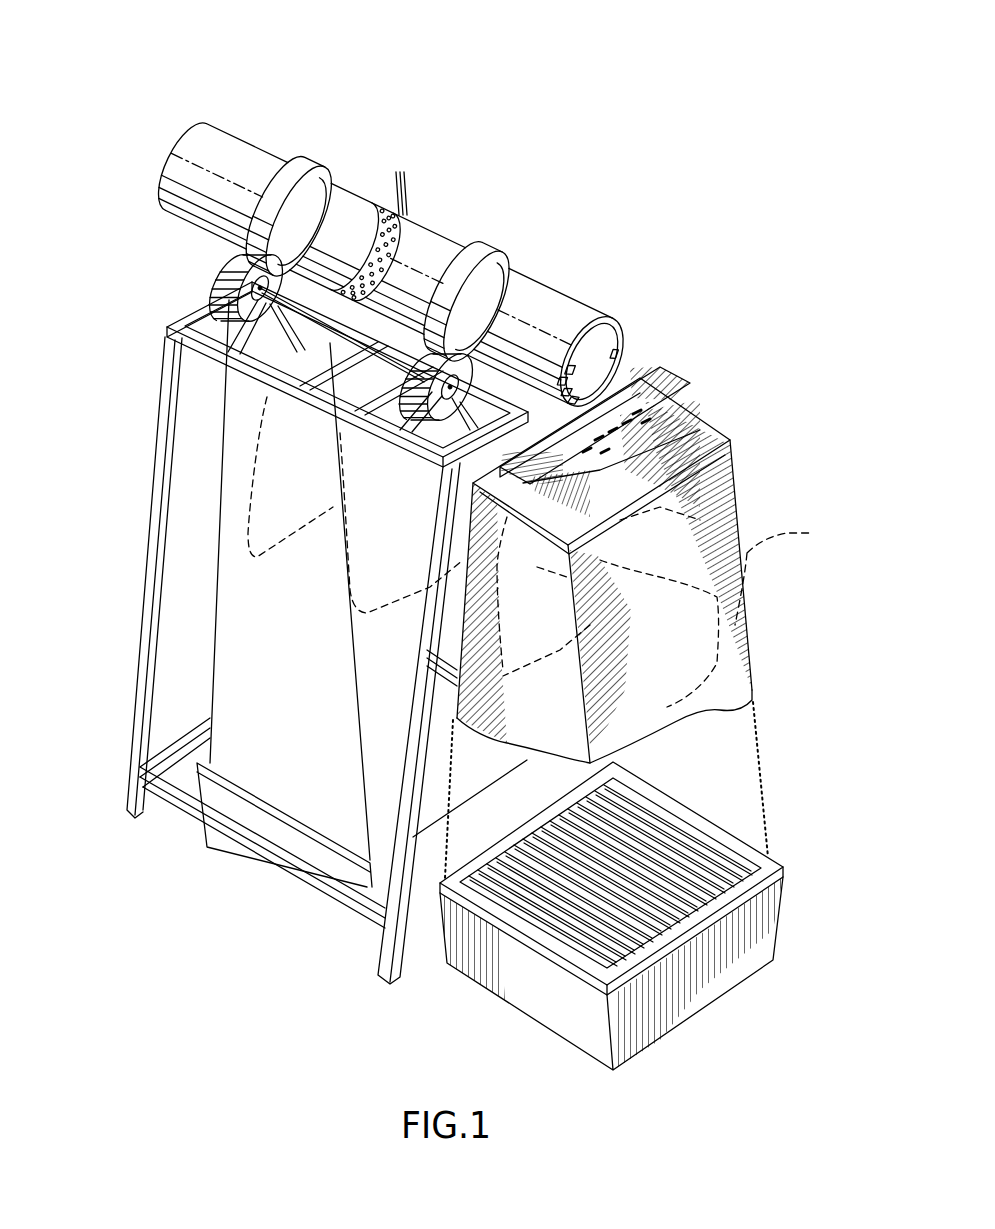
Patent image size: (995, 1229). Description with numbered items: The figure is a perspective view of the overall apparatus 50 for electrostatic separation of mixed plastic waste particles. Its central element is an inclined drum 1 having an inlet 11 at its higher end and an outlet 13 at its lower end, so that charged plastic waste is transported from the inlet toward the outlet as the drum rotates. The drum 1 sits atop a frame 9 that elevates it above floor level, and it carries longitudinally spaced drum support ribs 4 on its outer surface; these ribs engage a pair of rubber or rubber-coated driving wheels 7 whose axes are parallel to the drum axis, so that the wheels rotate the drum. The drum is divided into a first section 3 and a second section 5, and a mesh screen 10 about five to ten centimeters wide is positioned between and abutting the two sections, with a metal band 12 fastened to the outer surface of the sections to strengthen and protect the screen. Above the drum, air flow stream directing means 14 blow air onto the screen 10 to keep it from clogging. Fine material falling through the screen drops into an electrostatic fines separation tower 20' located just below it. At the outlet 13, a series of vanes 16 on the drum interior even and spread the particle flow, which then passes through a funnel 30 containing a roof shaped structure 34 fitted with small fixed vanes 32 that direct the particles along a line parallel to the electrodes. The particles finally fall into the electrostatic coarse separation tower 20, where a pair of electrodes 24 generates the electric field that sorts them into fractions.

The drum 1 is at (262, 140).
The first section 3 is at (426, 244).
The drum support ribs 4 is at (315, 164).
The second section 5 is at (755, 231).
The driving wheel 7 is at (236, 254).
The frame 9 is at (150, 461).
The mesh screen 10 is at (403, 220).
The inlet 11 is at (161, 149).
The metal band 12 is at (437, 248).
The outlet 13 is at (648, 358).
The air flow stream directing means 14 is at (408, 200).
The vanes 16 is at (623, 358).
The electrostatic coarse separation tower 20 is at (655, 570).
The electrostatic fines separation tower 20' is at (306, 610).
The electrodes 24 is at (768, 546).
The funnel 30 is at (695, 380).
The fixed vanes 32 is at (705, 437).
The roof shaped structure 34 is at (688, 405).
The apparatus for electrostatic separation of mixed plastic waste particles 50 is at (783, 178).